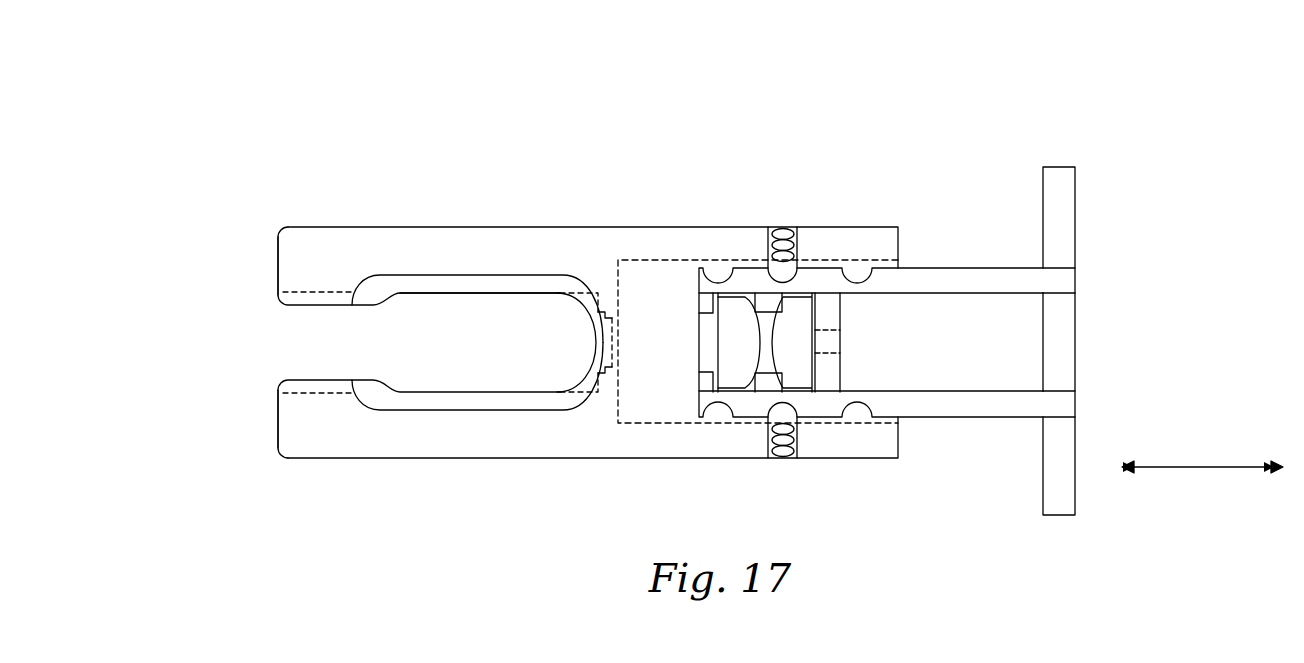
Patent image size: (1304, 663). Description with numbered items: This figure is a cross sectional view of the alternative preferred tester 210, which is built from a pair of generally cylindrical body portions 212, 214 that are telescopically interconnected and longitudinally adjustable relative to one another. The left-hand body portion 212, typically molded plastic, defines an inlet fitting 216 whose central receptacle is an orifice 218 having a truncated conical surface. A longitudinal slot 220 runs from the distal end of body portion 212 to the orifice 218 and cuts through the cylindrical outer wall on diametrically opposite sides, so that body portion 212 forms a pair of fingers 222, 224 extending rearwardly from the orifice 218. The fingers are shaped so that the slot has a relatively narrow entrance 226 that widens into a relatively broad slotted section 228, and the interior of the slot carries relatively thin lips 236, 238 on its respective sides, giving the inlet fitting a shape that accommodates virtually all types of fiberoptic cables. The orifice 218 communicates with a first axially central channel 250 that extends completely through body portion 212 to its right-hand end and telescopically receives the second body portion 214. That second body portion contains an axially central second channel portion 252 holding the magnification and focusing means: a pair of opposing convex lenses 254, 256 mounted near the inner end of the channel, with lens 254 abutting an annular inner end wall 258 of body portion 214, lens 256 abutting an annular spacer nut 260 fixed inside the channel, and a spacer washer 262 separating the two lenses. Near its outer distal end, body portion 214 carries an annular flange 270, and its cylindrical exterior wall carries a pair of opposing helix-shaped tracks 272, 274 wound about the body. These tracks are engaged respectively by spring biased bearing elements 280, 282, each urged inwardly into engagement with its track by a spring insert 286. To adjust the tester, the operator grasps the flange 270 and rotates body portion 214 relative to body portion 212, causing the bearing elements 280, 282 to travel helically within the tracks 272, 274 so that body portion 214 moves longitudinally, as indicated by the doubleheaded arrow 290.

The tester 210 is at (478, 140).
The body portion 212 is at (510, 462).
The body portion 214 is at (998, 268).
The inlet fitting 216 is at (432, 226).
The orifice 218 is at (605, 312).
The longitudinal slot 220 is at (513, 328).
The finger 222 is at (299, 247).
The finger 224 is at (310, 433).
The entrance 226 is at (313, 352).
The slotted section 228 is at (545, 360).
The lip 236 is at (447, 282).
The lip 238 is at (402, 400).
The first channel 250 is at (665, 260).
The second channel portion 252 is at (1045, 293).
The convex lens 254 is at (735, 320).
The convex lens 256 is at (822, 380).
The annular inner end wall 258 is at (708, 303).
The spacer nut 260 is at (840, 317).
The spacer washer 262 is at (765, 378).
The annular flange 270 is at (1063, 167).
The helix-shaped track 272 is at (855, 283).
The helix-shaped track 274 is at (860, 405).
The bearing element 280 is at (803, 365).
The bearing element 282 is at (800, 265).
The spring insert 286 is at (782, 225).
The doubleheaded arrow 290 is at (1195, 472).